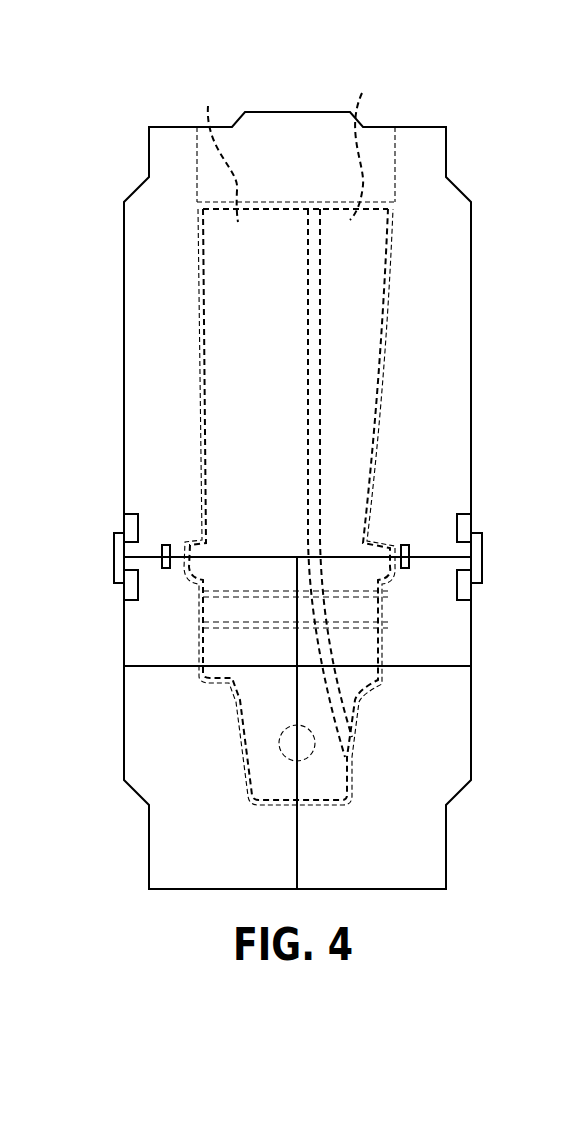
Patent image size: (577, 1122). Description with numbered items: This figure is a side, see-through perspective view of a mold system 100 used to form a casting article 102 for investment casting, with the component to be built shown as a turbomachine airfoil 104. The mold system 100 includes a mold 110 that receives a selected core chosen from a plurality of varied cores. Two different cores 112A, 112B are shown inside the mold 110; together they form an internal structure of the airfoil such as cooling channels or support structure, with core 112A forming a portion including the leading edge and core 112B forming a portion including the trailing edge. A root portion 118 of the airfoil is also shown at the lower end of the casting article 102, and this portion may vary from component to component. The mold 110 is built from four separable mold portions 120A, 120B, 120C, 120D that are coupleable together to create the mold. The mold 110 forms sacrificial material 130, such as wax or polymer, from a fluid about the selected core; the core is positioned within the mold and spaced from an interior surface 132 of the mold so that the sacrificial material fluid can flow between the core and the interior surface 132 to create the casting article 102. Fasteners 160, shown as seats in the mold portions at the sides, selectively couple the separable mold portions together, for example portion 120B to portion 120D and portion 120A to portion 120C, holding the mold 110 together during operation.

The mold system 100 is at (295, 465).
The casting article 102 is at (296, 196).
The turbomachine airfoil 104 is at (381, 491).
The mold 110 is at (452, 292).
The core 112A is at (209, 149).
The core 112B is at (374, 141).
The root portion 118 is at (240, 735).
The separable mold portion 120A is at (187, 846).
The separable mold portion 120B is at (428, 841).
The separable mold portion 120C is at (150, 363).
The separable mold portion 120D is at (457, 413).
The sacrificial material 130 is at (383, 354).
The interior surface 132 is at (375, 460).
The fastener 160 is at (114, 551).